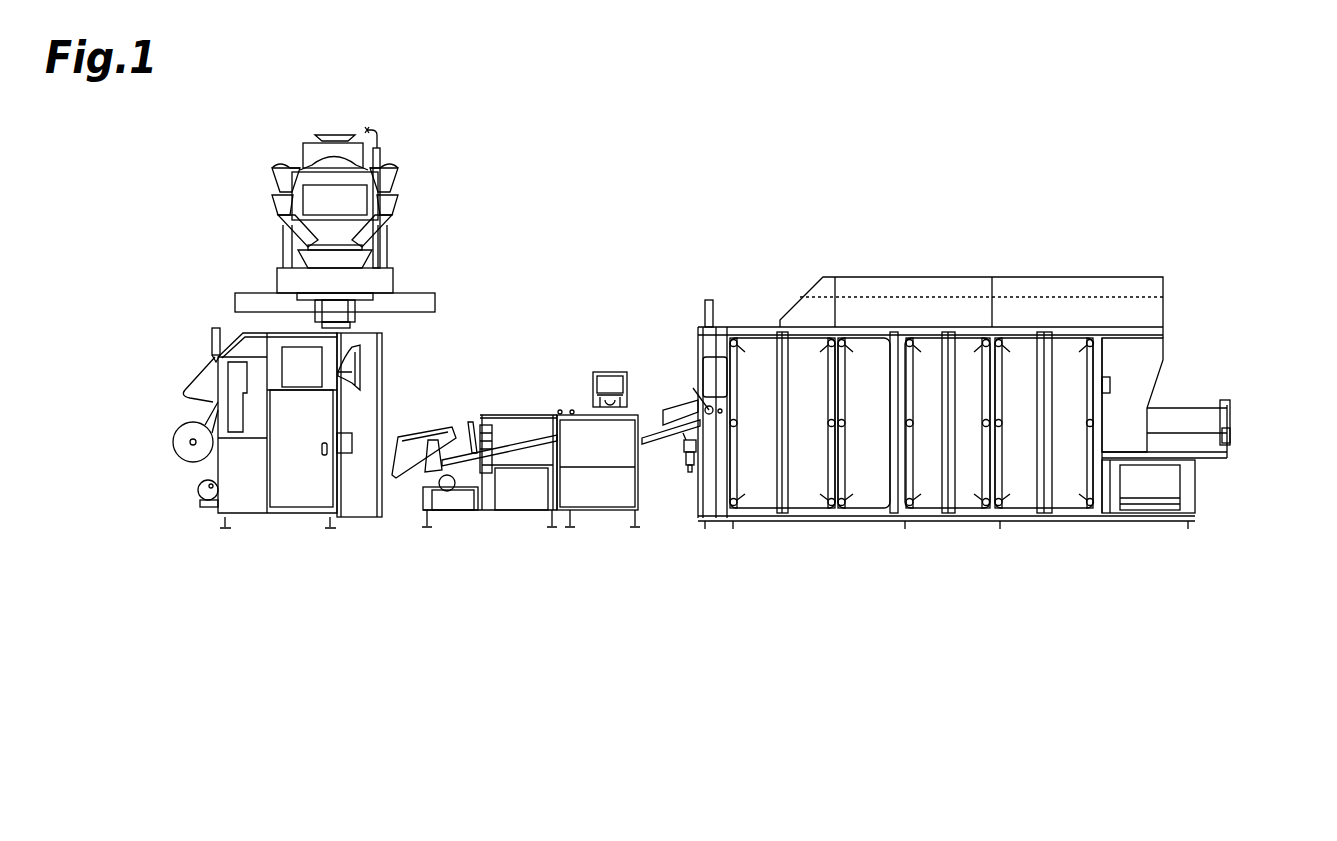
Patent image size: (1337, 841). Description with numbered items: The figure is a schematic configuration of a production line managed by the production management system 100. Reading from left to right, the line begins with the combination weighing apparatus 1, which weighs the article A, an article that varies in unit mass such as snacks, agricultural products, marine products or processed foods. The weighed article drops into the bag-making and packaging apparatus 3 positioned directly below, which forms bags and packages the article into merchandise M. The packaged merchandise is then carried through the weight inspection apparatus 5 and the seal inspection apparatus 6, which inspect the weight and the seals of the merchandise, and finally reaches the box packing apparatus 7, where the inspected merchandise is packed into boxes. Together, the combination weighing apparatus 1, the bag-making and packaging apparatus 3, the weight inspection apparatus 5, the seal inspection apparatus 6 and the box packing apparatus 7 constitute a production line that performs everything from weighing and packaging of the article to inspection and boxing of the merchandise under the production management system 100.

The production management system 100 is at (1240, 220).
The combination weighing apparatus 1 is at (436, 209).
The bag-making and packaging apparatus 3 is at (413, 357).
The weight inspection apparatus 5 is at (443, 400).
The seal inspection apparatus 6 is at (582, 348).
The box packing apparatus 7 is at (1001, 275).